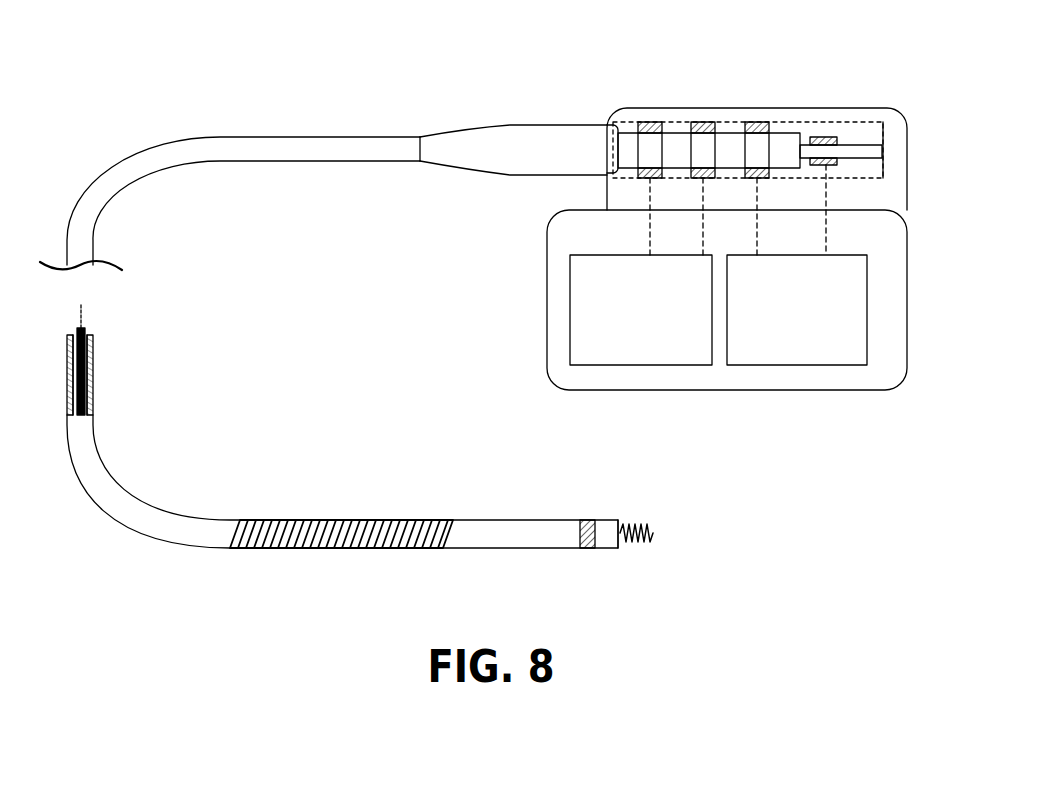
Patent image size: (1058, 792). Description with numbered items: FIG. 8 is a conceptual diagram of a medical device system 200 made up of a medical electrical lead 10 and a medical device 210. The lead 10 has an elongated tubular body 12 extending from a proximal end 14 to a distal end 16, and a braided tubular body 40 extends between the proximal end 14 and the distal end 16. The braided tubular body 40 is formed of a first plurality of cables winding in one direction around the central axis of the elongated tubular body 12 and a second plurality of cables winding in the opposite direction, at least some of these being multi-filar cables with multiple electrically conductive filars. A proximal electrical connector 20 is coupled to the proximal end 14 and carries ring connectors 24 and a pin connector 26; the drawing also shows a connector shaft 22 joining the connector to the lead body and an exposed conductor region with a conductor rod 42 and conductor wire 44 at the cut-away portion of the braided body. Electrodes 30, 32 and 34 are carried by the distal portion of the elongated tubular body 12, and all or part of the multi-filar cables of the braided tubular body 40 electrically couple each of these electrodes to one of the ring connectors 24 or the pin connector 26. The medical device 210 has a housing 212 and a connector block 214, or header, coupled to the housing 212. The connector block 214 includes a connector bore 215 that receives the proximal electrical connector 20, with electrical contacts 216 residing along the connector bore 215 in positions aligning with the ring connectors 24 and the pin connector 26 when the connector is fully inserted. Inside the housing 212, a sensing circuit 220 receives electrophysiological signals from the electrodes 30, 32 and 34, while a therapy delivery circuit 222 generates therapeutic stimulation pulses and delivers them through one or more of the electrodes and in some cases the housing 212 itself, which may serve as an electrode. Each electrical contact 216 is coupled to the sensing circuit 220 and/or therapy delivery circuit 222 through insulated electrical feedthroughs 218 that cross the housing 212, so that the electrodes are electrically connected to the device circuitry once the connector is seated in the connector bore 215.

The medical device system 200 is at (477, 46).
The medical electrical lead 10 is at (330, 118).
The elongated tubular body 12 is at (80, 207).
The proximal end 14 is at (420, 162).
The distal end 16 is at (618, 550).
The proximal electrical connector 20 is at (604, 104).
The connector shaft 22 is at (547, 177).
The ring connectors 24 is at (703, 147).
The pin connector 26 is at (850, 150).
The electrode 30 is at (628, 520).
The electrode 32 is at (587, 520).
The electrode 34 is at (275, 520).
The braided tubular body 40 is at (67, 382).
The conductor rod 42 is at (85, 332).
The conductor wire 44 is at (77, 326).
The medical device 210 is at (676, 410).
The housing 212 is at (547, 312).
The connector block 214 is at (668, 107).
The connector bore 215 is at (883, 168).
The electrical contacts 216 is at (822, 137).
The insulated electrical feedthroughs 218 is at (826, 233).
The sensing circuit 220 is at (648, 365).
The therapy delivery circuit 222 is at (803, 365).